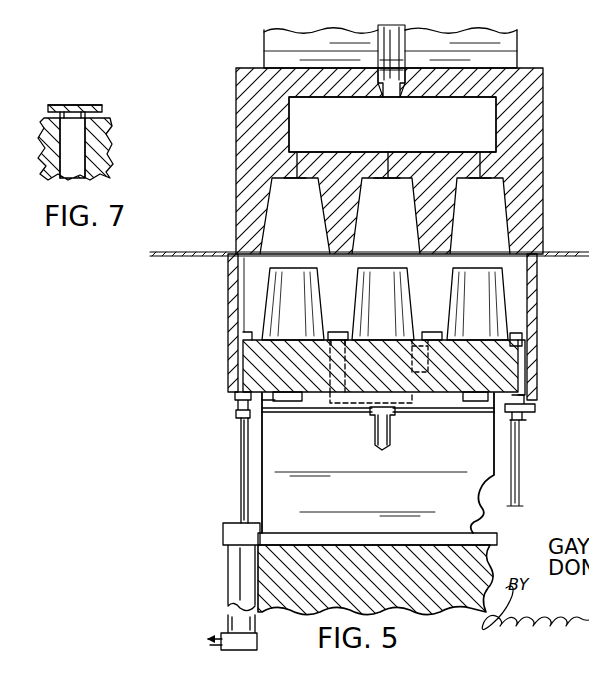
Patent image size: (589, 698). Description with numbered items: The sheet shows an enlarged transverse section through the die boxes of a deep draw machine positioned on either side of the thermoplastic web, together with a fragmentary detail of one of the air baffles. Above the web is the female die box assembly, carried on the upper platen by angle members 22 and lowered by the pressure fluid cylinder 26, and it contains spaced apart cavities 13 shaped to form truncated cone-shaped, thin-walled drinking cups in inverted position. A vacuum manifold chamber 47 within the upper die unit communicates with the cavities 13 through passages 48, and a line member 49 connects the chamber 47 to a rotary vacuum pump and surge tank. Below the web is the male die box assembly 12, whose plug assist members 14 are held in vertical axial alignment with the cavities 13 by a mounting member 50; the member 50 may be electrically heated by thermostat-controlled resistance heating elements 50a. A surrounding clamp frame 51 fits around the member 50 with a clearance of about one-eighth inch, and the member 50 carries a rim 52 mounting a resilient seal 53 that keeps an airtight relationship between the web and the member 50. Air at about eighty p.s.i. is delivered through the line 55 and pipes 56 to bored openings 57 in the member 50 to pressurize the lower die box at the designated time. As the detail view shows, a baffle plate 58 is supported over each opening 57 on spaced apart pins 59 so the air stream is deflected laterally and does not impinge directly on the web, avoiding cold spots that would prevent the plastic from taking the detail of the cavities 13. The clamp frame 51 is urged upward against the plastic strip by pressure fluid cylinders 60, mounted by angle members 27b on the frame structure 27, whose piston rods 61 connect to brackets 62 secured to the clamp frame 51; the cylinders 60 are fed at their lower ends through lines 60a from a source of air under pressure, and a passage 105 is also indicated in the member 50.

In FIG. 5, the male die box assembly 12 is at (540, 320).
In FIG. 5, the cavities 13 is at (510, 205).
In FIG. 5, the plug assist members 14 is at (496, 300).
In FIG. 5, the angle members 22 is at (517, 33).
In FIG. 7, the pressure fluid cylinder 26 is at (112, 160).
In FIG. 5, the pressure fluid cylinder 26 is at (380, 366).
In FIG. 5, the base 27 is at (486, 548).
In FIG. 5, the angle members 27b is at (488, 465).
In FIG. 5, the vacuum manifold chamber 47 is at (487, 126).
In FIG. 5, the passages 48 is at (298, 170).
In FIG. 5, the line member 49 is at (400, 31).
In FIG. 5, the plug assist mounting member 50 is at (240, 410).
In FIG. 5, the resistance heating elements 50a is at (292, 401).
In FIG. 5, the clamp frame 51 is at (228, 280).
In FIG. 5, the rim 52 is at (537, 350).
In FIG. 5, the resilient seal 53 is at (240, 338).
In FIG. 5, the air supply line 55 is at (373, 445).
In FIG. 5, the pipes 56 is at (372, 416).
In FIG. 7, the bored openings 57 is at (82, 150).
In FIG. 5, the bored openings 57 is at (330, 369).
In FIG. 7, the baffle plates 58 is at (72, 105).
In FIG. 5, the baffle plates 58 is at (337, 332).
In FIG. 7, the pins 59 is at (103, 110).
In FIG. 5, the pressure fluid cylinders 60 is at (235, 566).
In FIG. 5, the lines 60a is at (214, 634).
In FIG. 5, the piston rods 61 is at (241, 472).
In FIG. 5, the brackets 62 is at (238, 396).
In FIG. 5, the bore 105 is at (412, 352).